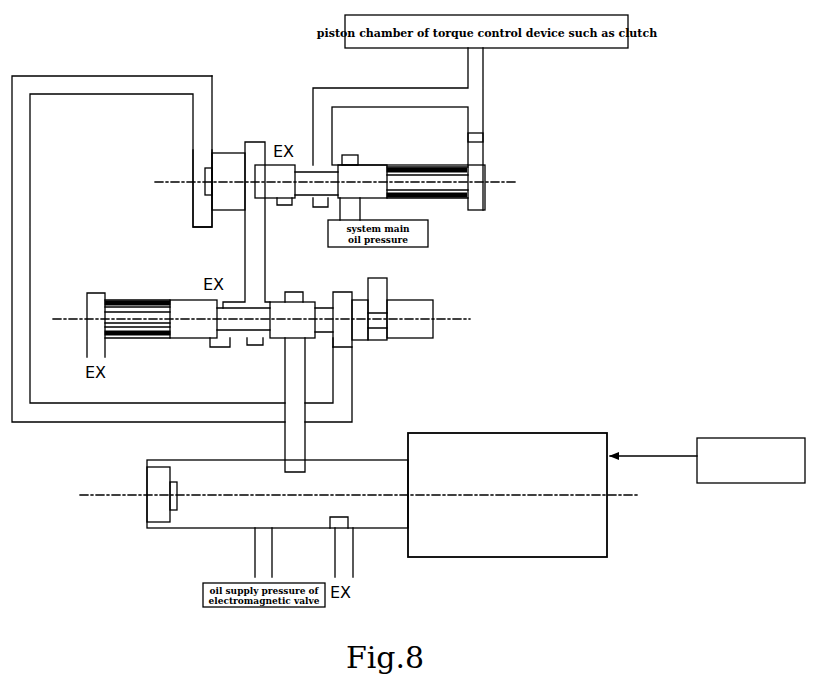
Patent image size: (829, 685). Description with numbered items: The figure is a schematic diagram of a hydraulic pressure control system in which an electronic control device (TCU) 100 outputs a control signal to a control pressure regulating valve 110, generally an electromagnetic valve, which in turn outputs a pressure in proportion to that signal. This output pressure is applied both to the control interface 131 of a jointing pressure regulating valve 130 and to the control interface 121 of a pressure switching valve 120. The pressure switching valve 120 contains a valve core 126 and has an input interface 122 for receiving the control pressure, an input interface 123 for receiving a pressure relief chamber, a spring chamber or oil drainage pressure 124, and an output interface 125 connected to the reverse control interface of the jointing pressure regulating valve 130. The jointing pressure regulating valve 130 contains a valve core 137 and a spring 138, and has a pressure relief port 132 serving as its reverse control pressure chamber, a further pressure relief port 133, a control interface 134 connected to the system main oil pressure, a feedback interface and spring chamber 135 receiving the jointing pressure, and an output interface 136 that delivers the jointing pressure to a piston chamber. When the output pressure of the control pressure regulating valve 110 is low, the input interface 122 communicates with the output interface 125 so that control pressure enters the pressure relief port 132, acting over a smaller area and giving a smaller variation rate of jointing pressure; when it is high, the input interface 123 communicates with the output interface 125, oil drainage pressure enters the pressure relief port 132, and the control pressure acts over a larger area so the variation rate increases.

The electronic control device (TCU) 100 is at (740, 477).
The control pressure regulating valve 110 is at (583, 485).
The pressure switching valve 120 is at (438, 317).
The control interface 121 is at (347, 297).
The input interface 122 is at (288, 293).
The input interface 123 is at (215, 323).
The spring chamber or oil drainage pressure 124 is at (100, 293).
The output interface 125 is at (262, 332).
The valve core 126 is at (257, 342).
The jointing pressure regulating valve 130 is at (192, 183).
The control interface 131 is at (205, 142).
The pressure relief port 132 is at (248, 213).
The pressure relief port 133 is at (290, 203).
The control interface 134 is at (358, 157).
The feedback interface and spring chamber 135 is at (485, 210).
The output interface 136 is at (322, 203).
The valve core 137 is at (337, 180).
The spring 138 is at (432, 200).